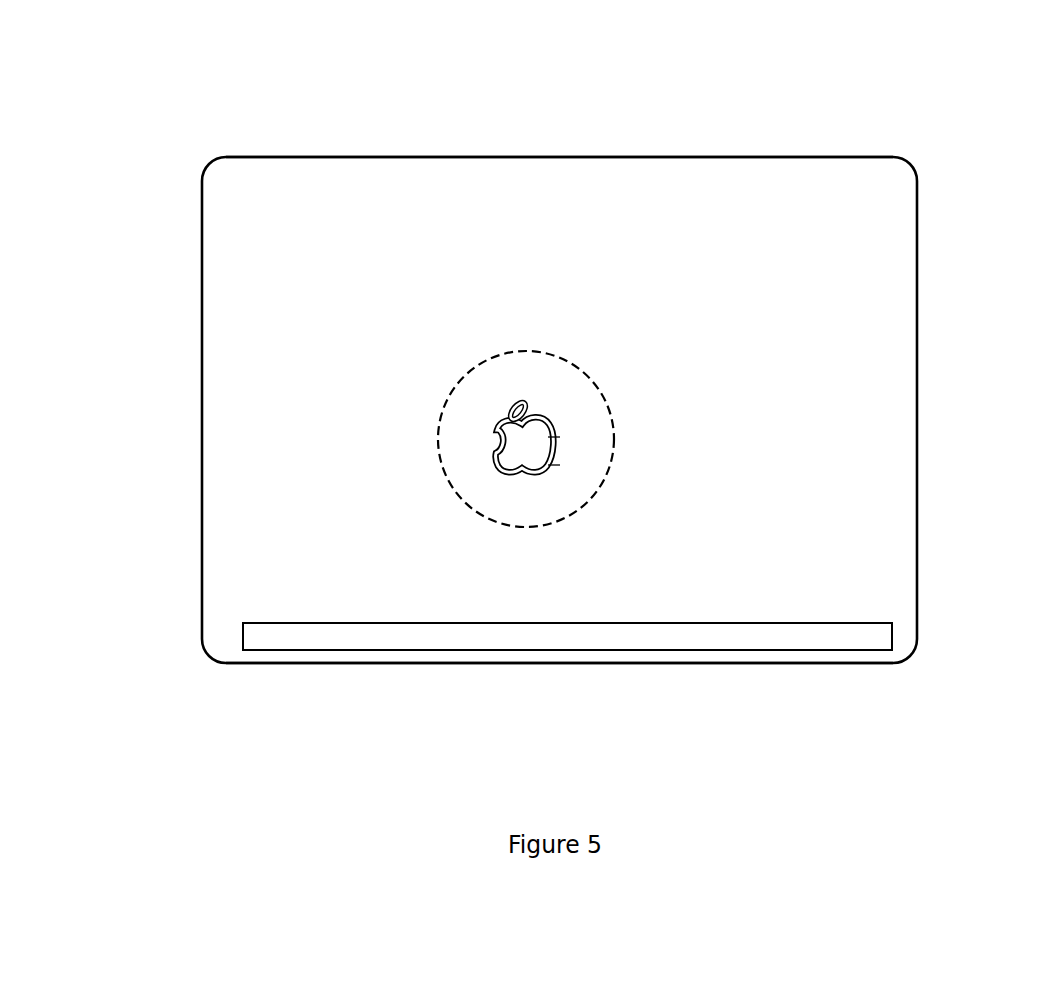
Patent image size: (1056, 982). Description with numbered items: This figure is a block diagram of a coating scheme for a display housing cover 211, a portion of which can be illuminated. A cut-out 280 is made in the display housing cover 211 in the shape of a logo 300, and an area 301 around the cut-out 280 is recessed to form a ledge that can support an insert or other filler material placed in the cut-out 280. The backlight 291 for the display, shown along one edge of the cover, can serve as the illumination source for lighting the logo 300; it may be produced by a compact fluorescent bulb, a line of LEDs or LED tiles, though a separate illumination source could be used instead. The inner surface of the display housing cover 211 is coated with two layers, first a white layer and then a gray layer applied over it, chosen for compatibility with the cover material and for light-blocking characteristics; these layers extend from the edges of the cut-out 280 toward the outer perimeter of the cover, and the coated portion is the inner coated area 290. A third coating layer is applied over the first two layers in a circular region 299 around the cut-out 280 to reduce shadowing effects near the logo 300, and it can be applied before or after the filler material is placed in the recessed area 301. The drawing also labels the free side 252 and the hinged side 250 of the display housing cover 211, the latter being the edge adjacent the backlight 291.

The display housing cover 211 is at (243, 342).
The inner coated area 290 is at (765, 250).
The free side 252 is at (640, 157).
The hinged side 250 is at (622, 662).
The backlight 291 is at (688, 645).
The circular region 299 is at (435, 425).
The cut-out 280 is at (520, 443).
The logo 300 is at (548, 437).
The area around the cut-out 301 is at (548, 465).